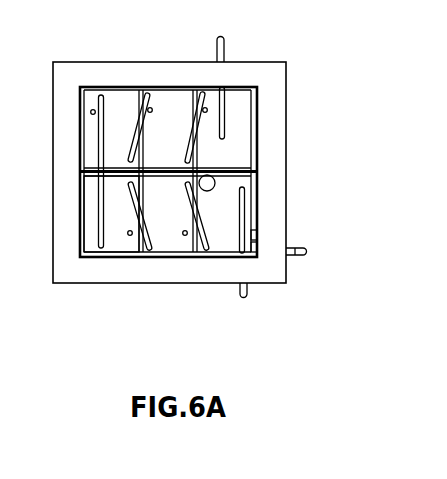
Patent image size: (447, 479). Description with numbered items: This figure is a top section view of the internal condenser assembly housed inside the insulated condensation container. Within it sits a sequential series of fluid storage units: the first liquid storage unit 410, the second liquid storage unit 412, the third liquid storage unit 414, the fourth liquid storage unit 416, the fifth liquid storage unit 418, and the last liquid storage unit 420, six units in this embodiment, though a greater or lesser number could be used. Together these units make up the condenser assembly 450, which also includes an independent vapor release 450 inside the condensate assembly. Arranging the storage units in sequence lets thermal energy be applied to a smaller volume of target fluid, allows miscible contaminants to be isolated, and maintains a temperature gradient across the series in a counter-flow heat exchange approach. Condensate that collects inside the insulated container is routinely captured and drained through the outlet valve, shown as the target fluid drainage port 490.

The first liquid storage unit 410 is at (235, 90).
The second liquid storage unit 412 is at (188, 89).
The third liquid storage unit 414 is at (127, 95).
The fourth liquid storage unit 416 is at (113, 253).
The fifth liquid storage unit 418 is at (187, 253).
The last liquid storage unit 420 is at (233, 253).
The independent vapor release inside condensate assembly 450 is at (210, 175).
The target fluid drainage port 490 is at (295, 248).